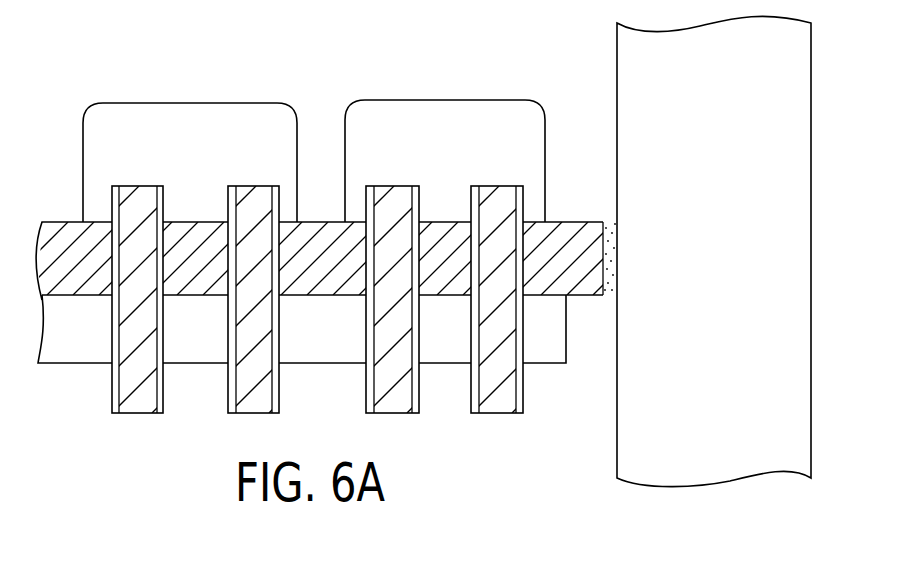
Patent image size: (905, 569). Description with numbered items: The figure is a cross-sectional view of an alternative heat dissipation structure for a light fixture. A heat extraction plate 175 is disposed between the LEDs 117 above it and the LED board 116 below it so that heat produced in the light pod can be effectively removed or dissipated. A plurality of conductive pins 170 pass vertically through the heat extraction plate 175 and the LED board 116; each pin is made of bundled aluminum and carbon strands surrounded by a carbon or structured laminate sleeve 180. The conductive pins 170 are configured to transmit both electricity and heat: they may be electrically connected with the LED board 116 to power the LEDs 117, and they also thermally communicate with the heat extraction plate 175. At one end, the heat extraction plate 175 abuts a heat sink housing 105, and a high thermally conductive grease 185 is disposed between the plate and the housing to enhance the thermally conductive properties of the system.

The heat sink housing 105 is at (701, 268).
The LED board 116 is at (83, 364).
The LEDs 117 is at (449, 100).
The conductive pins 170 is at (137, 197).
The heat extraction plate 175 is at (64, 237).
The sleeve 180 is at (167, 197).
The high thermally conductive grease 185 is at (610, 230).